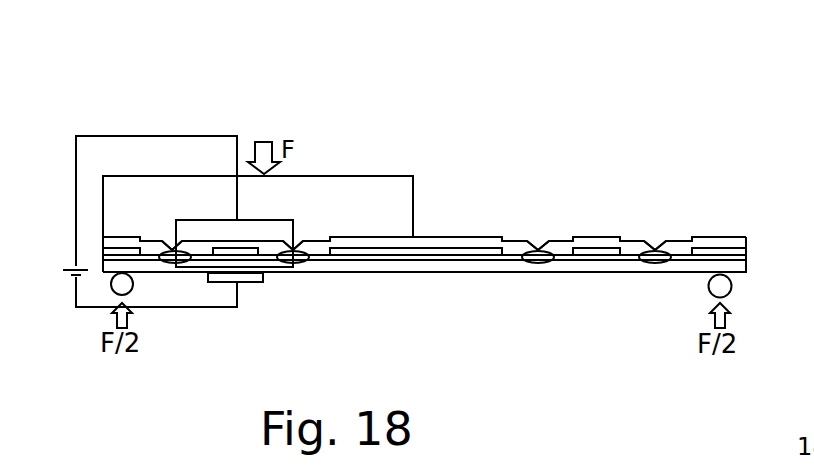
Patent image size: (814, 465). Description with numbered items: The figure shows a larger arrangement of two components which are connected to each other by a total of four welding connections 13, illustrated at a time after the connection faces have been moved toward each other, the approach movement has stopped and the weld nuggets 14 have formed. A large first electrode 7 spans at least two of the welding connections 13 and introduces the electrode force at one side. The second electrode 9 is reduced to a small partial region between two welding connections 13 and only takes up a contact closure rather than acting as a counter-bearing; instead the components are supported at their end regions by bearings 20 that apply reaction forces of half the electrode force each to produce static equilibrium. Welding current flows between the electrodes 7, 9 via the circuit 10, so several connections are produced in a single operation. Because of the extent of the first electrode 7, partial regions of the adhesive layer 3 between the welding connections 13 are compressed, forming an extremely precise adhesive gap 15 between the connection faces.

The adhesive layer 3 is at (473, 265).
The first electrode 7 is at (414, 190).
The second electrode 9 is at (243, 286).
The circuit 10 is at (170, 114).
The welding connection 13 is at (158, 216).
The weld nugget 14 is at (657, 250).
The adhesive gap 15 is at (459, 240).
The bearing 20 is at (130, 292).